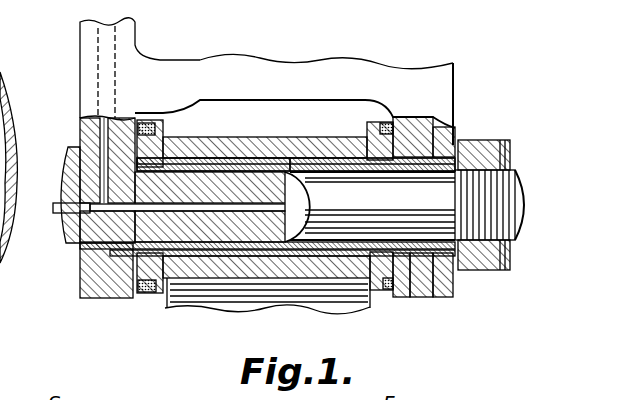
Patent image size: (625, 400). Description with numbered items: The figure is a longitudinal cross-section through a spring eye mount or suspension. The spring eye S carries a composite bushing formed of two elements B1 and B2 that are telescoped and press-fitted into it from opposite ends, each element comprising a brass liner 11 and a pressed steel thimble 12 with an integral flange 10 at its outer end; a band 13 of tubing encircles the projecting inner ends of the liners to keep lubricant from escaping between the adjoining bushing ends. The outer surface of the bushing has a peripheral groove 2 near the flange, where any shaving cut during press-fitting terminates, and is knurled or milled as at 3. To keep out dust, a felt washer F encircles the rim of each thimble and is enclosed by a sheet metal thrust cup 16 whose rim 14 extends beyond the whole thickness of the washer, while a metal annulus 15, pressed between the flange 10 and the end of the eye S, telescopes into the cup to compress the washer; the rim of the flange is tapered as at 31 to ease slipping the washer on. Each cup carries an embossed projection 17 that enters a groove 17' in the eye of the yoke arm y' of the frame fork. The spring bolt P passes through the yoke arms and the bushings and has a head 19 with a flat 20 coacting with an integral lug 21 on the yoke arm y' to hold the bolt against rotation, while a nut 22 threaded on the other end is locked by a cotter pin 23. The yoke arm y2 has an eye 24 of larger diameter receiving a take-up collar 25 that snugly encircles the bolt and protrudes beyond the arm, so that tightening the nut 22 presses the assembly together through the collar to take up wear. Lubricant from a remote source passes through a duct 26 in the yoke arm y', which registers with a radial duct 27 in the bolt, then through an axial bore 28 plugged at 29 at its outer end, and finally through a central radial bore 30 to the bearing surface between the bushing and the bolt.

The peripheral groove 2 is at (114, 83).
The knurled outer surface 3 is at (245, 113).
The flange 10 is at (140, 140).
The brass liner 11 is at (205, 137).
The pressed steel thimble 12 is at (296, 158).
The band of tubing 13 is at (253, 256).
The rim of thrust cup 14 is at (140, 296).
The metal annulus 15 is at (368, 281).
The thrust cup 16 is at (140, 147).
The embossed projection 17 is at (92, 288).
The groove 17' is at (230, 305).
The head 19 is at (79, 258).
The flat 20 is at (106, 195).
The lug 21 is at (72, 152).
The nut 22 is at (490, 271).
The cotter pin 23 is at (508, 204).
The eye 24 is at (462, 141).
The take-up collar 25 is at (430, 256).
The duct 26 is at (100, 42).
The radial duct 27 is at (53, 208).
The axial bore 28 is at (207, 279).
The plug 29 is at (62, 214).
The central radial bore 30 is at (302, 198).
The tapered rim 31 is at (157, 293).
The bushing element B1 is at (232, 158).
The bushing element B2 is at (335, 158).
The felt washer F is at (146, 128).
The spring bolt P is at (295, 207).
The spring eye S is at (202, 135).
The yoke arm y' is at (121, 110).
The yoke arm y2 is at (452, 128).